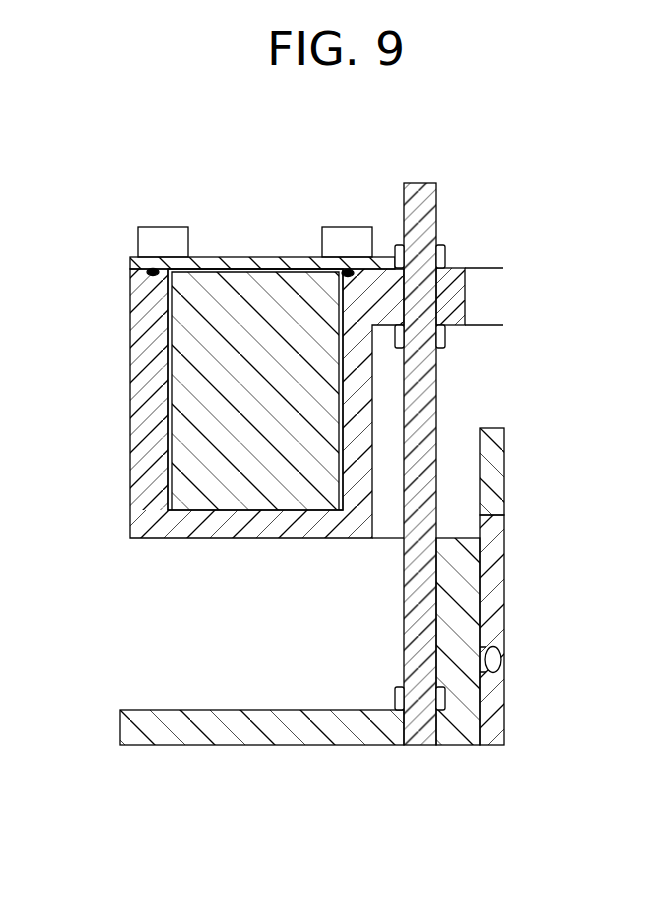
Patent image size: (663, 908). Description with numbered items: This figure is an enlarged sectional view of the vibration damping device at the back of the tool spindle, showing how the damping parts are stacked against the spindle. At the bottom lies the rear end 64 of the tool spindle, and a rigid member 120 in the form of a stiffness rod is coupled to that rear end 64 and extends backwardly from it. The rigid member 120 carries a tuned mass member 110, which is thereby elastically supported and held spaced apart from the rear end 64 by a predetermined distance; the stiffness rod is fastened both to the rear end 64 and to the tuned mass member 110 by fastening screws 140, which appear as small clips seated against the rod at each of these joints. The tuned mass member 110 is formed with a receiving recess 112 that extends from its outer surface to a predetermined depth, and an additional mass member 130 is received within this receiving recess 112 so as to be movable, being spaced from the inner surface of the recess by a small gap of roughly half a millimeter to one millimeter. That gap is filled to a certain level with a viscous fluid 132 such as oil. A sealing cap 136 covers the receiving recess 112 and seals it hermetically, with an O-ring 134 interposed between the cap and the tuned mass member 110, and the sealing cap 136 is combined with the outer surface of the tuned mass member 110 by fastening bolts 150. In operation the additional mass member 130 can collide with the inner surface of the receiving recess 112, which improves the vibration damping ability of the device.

The rear end of the tool spindle 64 is at (121, 728).
The tuned mass member 110 is at (140, 521).
The receiving recess 112 is at (167, 407).
The rigid member 120 is at (438, 402).
The additional mass member 130 is at (203, 352).
The viscous fluid 132 is at (170, 468).
The O-ring 134 is at (150, 272).
The sealing cap 136 is at (227, 257).
The fastening screws 140 is at (445, 253).
The fastening bolts 150 is at (341, 240).